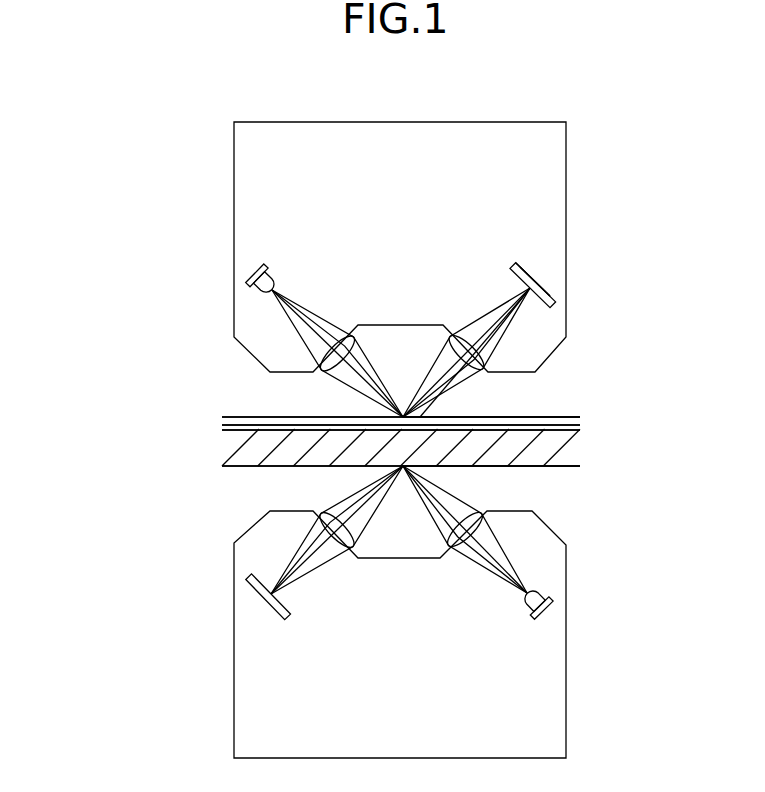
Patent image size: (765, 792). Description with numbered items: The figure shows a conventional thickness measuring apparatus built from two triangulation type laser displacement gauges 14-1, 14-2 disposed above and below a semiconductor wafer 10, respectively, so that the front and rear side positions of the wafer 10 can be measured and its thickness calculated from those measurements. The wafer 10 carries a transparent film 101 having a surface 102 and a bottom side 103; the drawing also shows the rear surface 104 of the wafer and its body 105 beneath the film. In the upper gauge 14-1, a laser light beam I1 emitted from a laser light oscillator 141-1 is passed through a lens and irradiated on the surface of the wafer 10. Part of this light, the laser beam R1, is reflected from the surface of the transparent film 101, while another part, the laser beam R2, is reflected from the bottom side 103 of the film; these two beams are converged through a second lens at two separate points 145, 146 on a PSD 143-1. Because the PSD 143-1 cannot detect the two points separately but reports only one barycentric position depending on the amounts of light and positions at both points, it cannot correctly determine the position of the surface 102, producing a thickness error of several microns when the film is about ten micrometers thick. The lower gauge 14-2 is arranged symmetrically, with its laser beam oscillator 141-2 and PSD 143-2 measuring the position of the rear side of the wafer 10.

The laser displacement gauge 14-1 is at (668, 177).
The laser displacement gauge 14-2 is at (668, 702).
The laser light oscillator 141-1 is at (262, 265).
The laser beam oscillator 141-2 is at (553, 608).
The PSD 143-1 is at (554, 303).
The PSD 143-2 is at (264, 604).
The convergence point 145 is at (552, 268).
The convergence point 146 is at (540, 254).
The semiconductor wafer 10 is at (90, 418).
The transparent film 101 is at (222, 418).
The surface of the transparent film 102 is at (527, 417).
The bottom side of the transparent film 103 is at (580, 421).
The lower surface of substrate 104 is at (545, 466).
The substrate 105 is at (235, 450).
The laser light beam I1 is at (348, 350).
The laser beam reflected from the film surface R1 is at (426, 378).
The laser beam reflected from the film bottom R2 is at (427, 400).